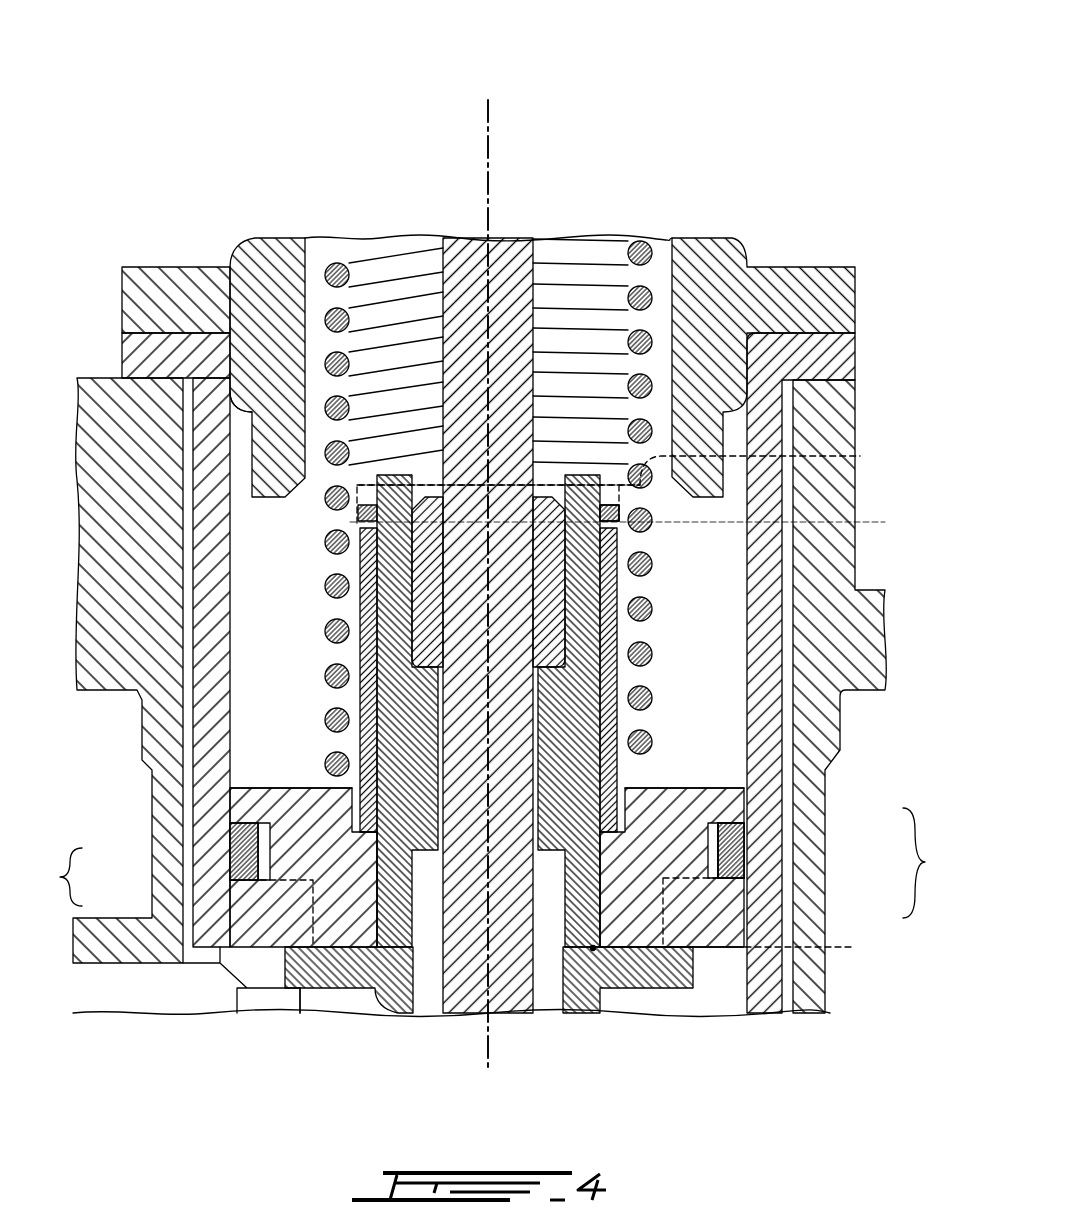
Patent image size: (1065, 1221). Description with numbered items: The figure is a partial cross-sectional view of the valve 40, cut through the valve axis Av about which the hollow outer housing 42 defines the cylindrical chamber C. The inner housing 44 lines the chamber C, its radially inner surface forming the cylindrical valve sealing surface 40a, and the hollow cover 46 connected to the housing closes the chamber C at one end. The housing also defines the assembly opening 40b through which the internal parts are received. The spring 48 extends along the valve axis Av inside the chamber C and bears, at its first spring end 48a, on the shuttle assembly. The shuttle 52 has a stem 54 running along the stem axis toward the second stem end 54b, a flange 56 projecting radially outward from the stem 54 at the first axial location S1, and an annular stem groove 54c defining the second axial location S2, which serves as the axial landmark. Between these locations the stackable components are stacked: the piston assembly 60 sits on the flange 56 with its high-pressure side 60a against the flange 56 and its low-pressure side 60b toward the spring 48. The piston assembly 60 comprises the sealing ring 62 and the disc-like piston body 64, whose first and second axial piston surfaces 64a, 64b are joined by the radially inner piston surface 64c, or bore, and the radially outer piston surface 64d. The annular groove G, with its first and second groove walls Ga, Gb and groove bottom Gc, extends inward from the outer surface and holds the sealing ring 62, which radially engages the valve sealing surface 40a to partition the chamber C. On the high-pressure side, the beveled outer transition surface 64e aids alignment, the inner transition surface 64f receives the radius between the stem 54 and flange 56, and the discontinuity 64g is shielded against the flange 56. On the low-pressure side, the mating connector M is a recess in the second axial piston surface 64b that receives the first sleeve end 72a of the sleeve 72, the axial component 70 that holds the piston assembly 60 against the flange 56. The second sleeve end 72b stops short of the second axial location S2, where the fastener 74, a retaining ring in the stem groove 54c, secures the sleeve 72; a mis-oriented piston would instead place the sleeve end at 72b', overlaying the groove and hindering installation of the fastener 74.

The valve 40 is at (113, 106).
The valve sealing surface 40a is at (236, 475).
The assembly opening 40b is at (458, 367).
The outer housing 42 is at (100, 403).
The inner housing 44 is at (125, 350).
The cover 46 is at (135, 290).
The spring 48 is at (324, 264).
The first spring end 48a is at (648, 782).
The shuttle 52 is at (535, 629).
The stem 54 is at (520, 430).
The second stem end 54b is at (583, 475).
The stem groove 54c is at (612, 505).
The flange 56 is at (697, 977).
The piston assembly 60 is at (489, 772).
The high-pressure side 60a is at (318, 1045).
The low-pressure side 60b is at (435, 680).
The sealing ring 62 is at (210, 866).
The piston body 64 is at (519, 927).
The first axial piston surface 64a is at (267, 950).
The second axial piston surface 64b is at (257, 787).
The radially inner piston surface 64c is at (385, 890).
The radially outer piston surface 64d is at (230, 812).
The outer transition surface 64e is at (740, 940).
The inner transition surface 64f is at (592, 950).
The discontinuity 64g is at (313, 958).
The axial component 70 is at (728, 595).
The sleeve 72 is at (639, 570).
The first sleeve end 72a is at (612, 850).
The second sleeve end 72b is at (667, 535).
The second sleeve end at second stacking height 72b' is at (639, 482).
The fastener 74 is at (607, 514).
The chamber C is at (288, 570).
The mating connector M is at (353, 787).
The annular groove G is at (831, 863).
The first groove wall Ga is at (742, 870).
The second groove wall Gb is at (727, 830).
The groove bottom Gc is at (712, 855).
The first axial location S1 is at (818, 948).
The second axial location S2 is at (638, 523).
The valve axis Av is at (490, 147).